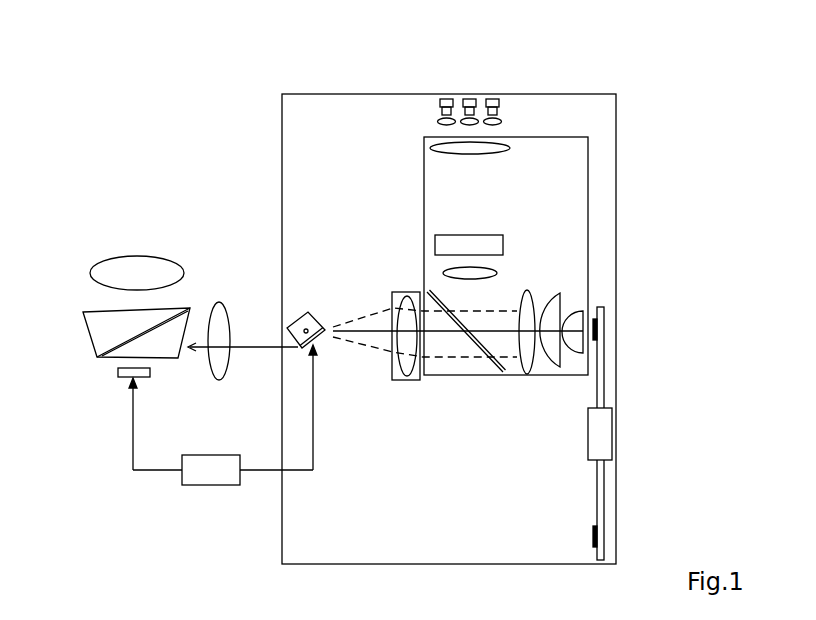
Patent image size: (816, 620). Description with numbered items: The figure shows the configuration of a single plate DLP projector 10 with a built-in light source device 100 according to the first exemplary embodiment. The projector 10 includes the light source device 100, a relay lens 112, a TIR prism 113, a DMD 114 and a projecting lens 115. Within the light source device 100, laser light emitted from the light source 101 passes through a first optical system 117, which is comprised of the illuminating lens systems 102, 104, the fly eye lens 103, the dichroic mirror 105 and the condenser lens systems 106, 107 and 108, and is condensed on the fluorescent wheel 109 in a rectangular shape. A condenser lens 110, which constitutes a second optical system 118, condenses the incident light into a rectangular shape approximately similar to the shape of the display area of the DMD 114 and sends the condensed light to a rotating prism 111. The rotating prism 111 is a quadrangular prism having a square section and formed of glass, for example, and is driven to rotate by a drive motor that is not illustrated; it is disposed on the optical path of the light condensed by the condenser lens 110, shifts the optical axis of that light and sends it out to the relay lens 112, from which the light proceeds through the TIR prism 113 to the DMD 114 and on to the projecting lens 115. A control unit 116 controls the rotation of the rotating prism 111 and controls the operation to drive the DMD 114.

The projector 10 is at (419, 54).
The light source device 100 is at (449, 565).
The light source 101 is at (509, 113).
The illuminating lens system 102 is at (510, 148).
The fly eye lens 103 is at (504, 243).
The illuminating lens system 104 is at (442, 270).
The dichroic mirror 105 is at (426, 291).
The condenser lens system 106 is at (527, 374).
The condenser lens system 107 is at (549, 374).
The condenser lens system 108 is at (562, 308).
The fluorescent wheel 109 is at (613, 433).
The condenser lens 110 is at (405, 383).
The rotating prism 111 is at (311, 312).
The relay lens 112 is at (220, 302).
The TIR prism 113 is at (85, 343).
The DMD 114 is at (117, 372).
The projecting lens 115 is at (90, 272).
The control unit 116 is at (210, 485).
The first optical system 117 is at (589, 256).
The second optical system 118 is at (395, 383).